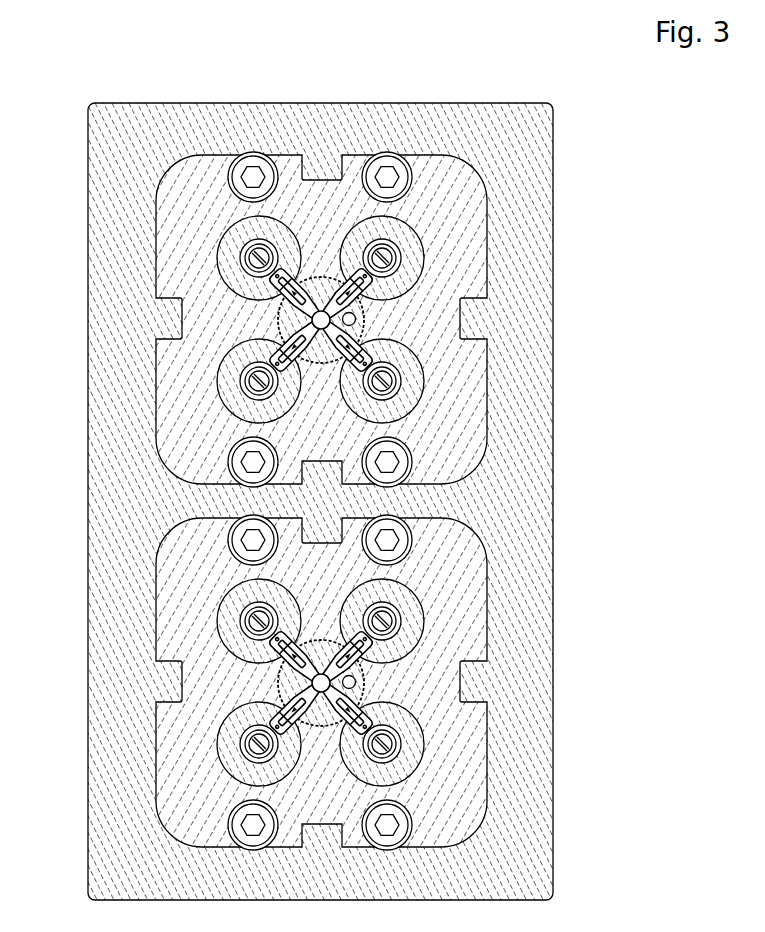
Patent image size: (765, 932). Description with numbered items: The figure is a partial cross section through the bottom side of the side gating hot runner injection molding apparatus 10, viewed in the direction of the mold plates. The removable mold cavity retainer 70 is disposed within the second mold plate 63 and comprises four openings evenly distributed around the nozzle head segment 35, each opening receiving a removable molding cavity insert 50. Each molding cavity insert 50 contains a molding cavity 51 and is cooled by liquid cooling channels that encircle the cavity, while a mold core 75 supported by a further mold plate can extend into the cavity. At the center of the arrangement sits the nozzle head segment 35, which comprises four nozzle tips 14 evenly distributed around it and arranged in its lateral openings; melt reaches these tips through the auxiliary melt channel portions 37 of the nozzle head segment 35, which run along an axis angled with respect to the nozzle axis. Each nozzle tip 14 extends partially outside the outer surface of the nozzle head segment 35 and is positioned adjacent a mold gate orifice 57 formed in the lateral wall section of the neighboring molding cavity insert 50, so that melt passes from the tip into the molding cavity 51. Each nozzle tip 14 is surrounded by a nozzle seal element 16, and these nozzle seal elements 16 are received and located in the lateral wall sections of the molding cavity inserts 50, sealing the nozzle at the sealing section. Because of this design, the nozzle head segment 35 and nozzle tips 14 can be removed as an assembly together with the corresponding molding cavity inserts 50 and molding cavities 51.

The side gating hot runner injection molding apparatus 10 is at (509, 71).
The second mold plate 63 is at (128, 152).
The mold cavity retainer 70 is at (180, 155).
The molding cavity insert 50 is at (299, 285).
The nozzle tip 14 is at (314, 283).
The nozzle head segment 35 is at (333, 282).
The molding cavity 51 is at (396, 247).
The mold core 75 is at (396, 260).
The auxiliary melt channel portion 37 is at (340, 310).
The nozzle seal element 16 is at (264, 290).
The mold gate orifice 57 is at (256, 363).